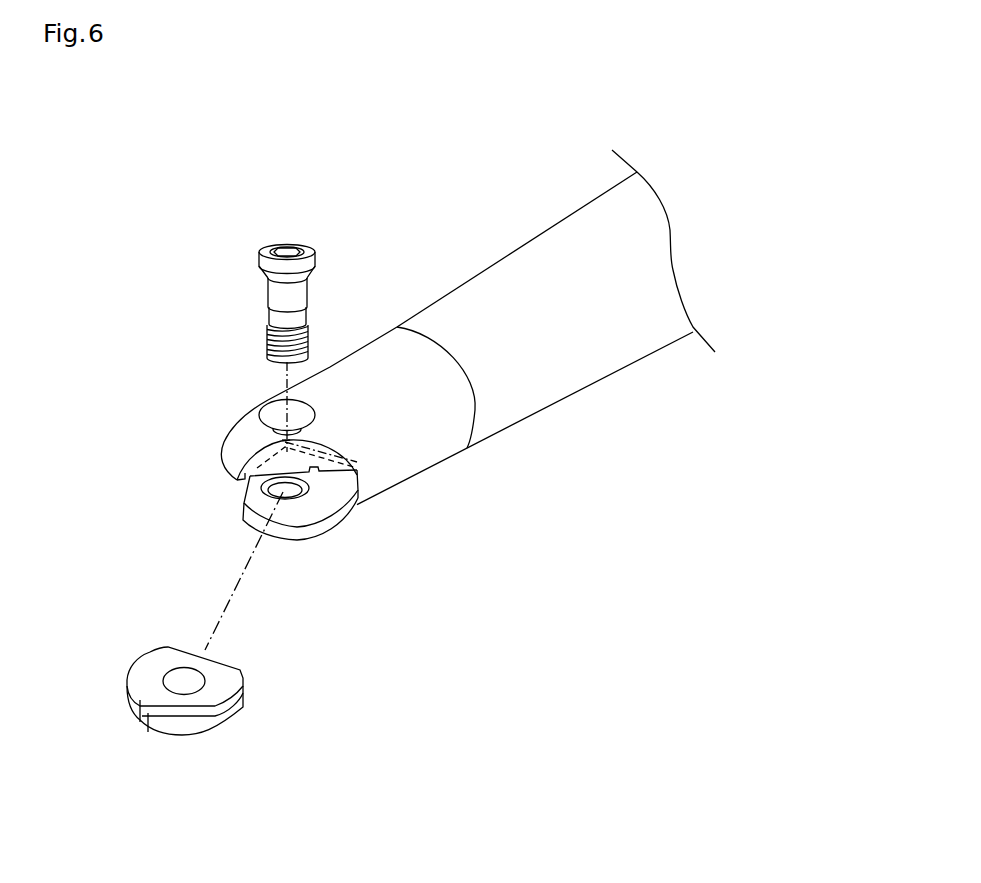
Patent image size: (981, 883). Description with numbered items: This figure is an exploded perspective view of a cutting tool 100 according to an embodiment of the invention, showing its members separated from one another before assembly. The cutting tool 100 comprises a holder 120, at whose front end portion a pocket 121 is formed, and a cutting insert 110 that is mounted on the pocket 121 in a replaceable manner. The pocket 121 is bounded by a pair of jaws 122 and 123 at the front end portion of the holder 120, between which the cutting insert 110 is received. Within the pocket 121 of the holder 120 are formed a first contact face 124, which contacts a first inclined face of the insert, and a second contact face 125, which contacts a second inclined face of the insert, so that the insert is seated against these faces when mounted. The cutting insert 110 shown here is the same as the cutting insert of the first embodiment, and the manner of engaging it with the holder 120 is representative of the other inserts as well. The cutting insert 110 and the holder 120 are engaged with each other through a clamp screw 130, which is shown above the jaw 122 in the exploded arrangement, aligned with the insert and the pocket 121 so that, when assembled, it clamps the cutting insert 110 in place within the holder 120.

The cutting tool 100 is at (232, 134).
The cutting insert 110 is at (135, 626).
The holder 120 is at (578, 391).
The pocket 121 is at (221, 493).
The jaw 122 is at (232, 452).
The jaw 123 is at (295, 535).
The first contact face 124 is at (313, 453).
The second contact face 125 is at (362, 478).
The clamp screw 130 is at (288, 243).